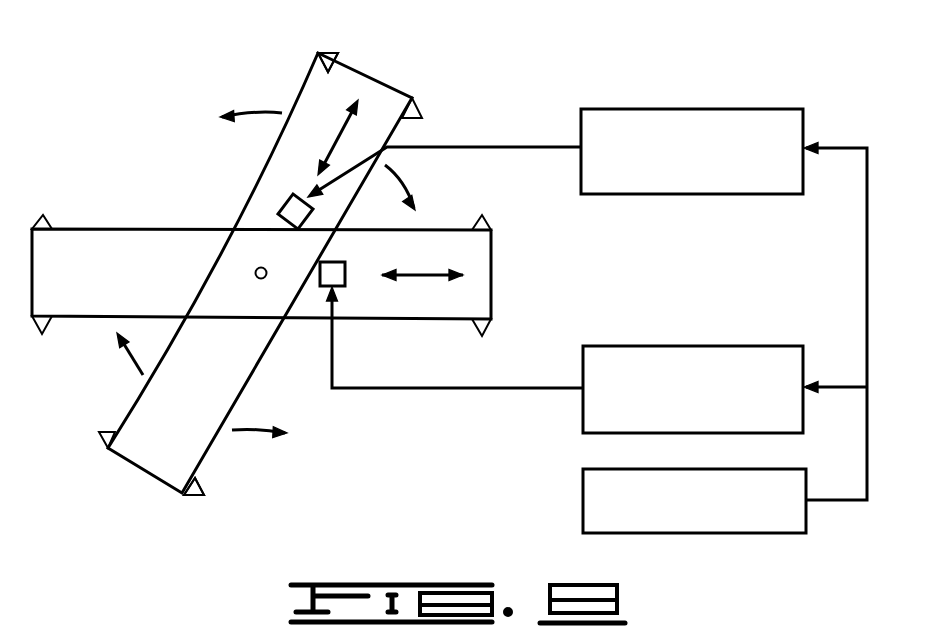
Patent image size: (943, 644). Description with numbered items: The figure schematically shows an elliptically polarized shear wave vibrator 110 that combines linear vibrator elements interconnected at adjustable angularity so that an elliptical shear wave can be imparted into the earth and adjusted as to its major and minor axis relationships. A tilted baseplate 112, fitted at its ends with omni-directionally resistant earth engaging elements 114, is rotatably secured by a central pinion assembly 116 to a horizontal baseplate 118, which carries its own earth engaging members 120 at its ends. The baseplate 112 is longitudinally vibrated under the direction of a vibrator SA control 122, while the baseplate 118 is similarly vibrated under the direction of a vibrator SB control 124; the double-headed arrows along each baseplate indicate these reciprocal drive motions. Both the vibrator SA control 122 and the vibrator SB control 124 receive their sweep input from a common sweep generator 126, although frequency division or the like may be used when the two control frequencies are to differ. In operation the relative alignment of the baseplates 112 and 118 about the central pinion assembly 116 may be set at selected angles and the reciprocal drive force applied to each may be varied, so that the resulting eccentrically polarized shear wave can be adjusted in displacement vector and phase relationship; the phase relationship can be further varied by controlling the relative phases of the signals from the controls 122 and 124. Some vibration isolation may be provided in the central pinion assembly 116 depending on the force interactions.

The elliptically polarized shear wave vibrator 110 is at (460, 82).
The baseplate 112 is at (237, 344).
The omni-directionally resistant earth engaging elements 114 is at (330, 58).
The central pinion assembly 116 is at (261, 267).
The baseplate 118 is at (143, 287).
The earth engaging members 120 is at (43, 217).
The vibrator SA control 122 is at (697, 109).
The vibrator SB control 124 is at (693, 346).
The sweep generator 126 is at (707, 533).